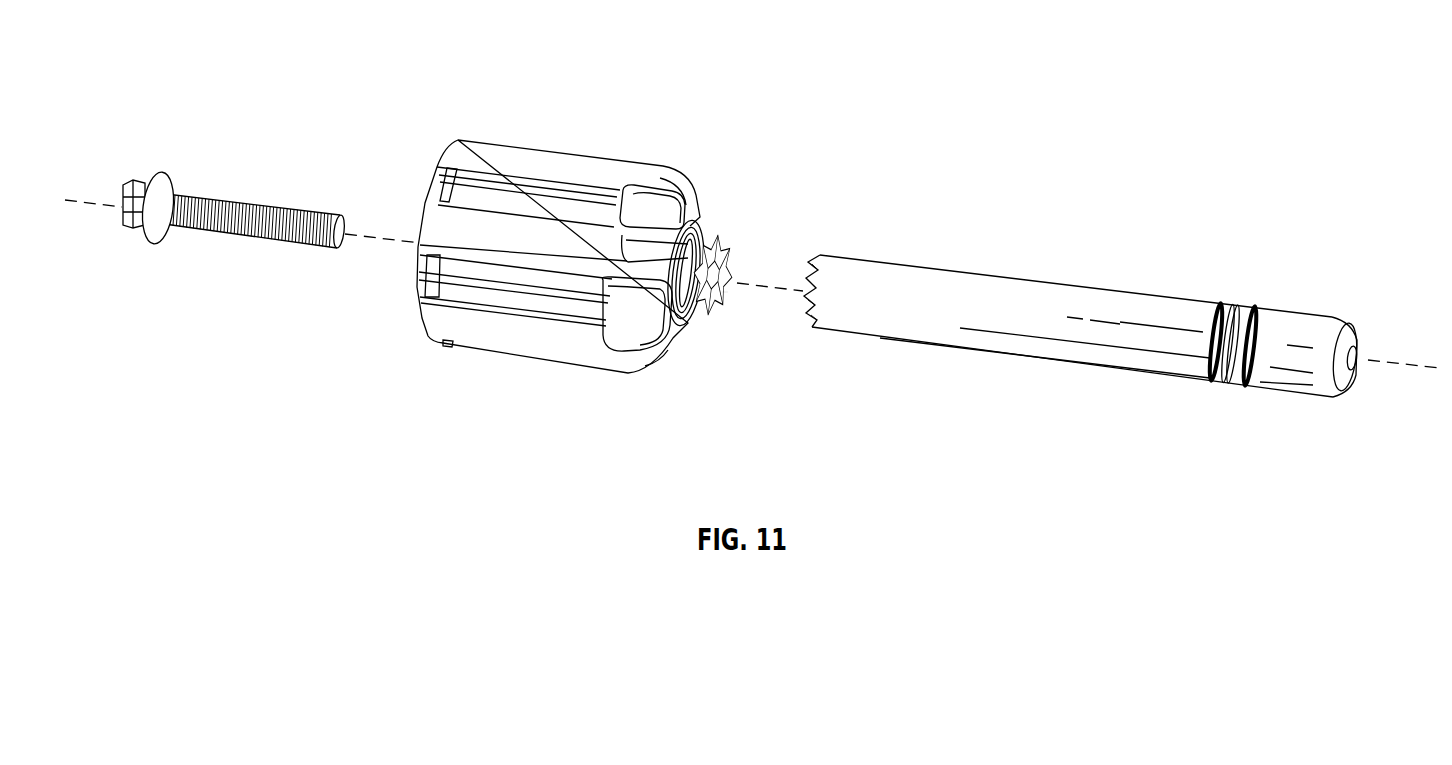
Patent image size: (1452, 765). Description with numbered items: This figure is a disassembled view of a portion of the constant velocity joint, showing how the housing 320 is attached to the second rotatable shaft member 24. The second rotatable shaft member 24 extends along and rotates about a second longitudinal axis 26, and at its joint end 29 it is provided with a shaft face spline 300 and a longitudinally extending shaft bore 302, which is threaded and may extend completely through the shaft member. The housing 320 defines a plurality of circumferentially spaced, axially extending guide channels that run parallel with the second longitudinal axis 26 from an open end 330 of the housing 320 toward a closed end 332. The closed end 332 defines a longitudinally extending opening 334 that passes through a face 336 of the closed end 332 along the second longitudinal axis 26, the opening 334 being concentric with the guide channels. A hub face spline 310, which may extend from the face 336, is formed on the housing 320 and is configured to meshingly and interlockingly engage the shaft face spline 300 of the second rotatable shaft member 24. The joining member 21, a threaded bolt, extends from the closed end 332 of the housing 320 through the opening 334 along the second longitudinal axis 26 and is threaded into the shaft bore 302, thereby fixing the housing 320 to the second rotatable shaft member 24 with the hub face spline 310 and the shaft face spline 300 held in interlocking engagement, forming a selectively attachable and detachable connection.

The joining member 21 is at (209, 194).
The second longitudinal axis 26 is at (104, 207).
The housing 320 is at (609, 240).
The open end 330 is at (464, 152).
The closed end 332 is at (683, 203).
The face 336 is at (678, 330).
The hub face spline 310 is at (745, 263).
The opening 334 is at (722, 292).
The shaft face spline 300 is at (810, 262).
The joint end 29 is at (862, 254).
The second rotatable shaft member 24 is at (1104, 302).
The shaft bore 302 is at (1358, 362).